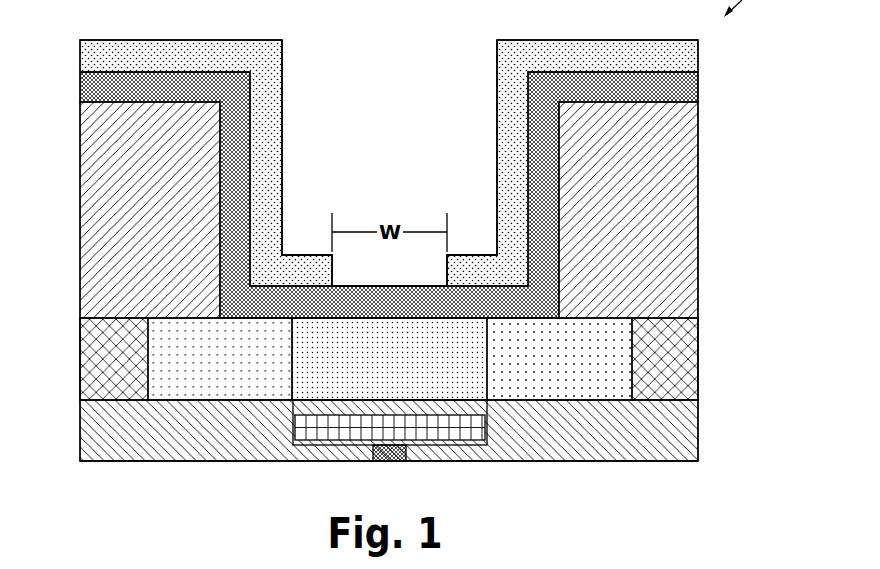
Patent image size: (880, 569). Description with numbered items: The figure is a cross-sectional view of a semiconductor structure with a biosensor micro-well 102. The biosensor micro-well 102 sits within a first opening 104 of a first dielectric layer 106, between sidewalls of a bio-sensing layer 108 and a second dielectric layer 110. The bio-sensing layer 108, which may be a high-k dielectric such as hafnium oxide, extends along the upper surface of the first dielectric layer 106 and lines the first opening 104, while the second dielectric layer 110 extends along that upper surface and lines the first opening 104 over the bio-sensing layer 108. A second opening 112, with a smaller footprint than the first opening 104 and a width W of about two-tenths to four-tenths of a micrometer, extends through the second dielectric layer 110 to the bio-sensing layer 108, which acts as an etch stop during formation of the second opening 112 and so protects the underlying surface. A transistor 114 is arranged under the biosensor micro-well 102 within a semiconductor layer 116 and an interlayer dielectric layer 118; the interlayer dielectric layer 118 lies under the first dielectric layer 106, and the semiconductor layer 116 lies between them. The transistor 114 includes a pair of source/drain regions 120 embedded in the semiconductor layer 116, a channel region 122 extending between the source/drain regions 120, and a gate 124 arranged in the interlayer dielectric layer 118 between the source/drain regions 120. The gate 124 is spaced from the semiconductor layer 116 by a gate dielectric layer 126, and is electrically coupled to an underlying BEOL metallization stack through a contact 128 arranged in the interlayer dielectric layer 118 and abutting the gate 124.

The biosensor micro-well 102 is at (308, 42).
The first opening 104 is at (229, 317).
The first dielectric layer 106 is at (80, 211).
The bio-sensing layer 108 is at (80, 88).
The second dielectric layer 110 is at (80, 57).
The second opening 112 is at (347, 288).
The transistor 114 is at (504, 470).
The semiconductor layer 116 is at (80, 357).
The interlayer dielectric layer 118 is at (80, 431).
The source/drain regions 120 is at (543, 371).
The channel region 122 is at (375, 371).
The gate 124 is at (335, 444).
The gate dielectric layer 126 is at (447, 410).
The contact 128 is at (392, 453).